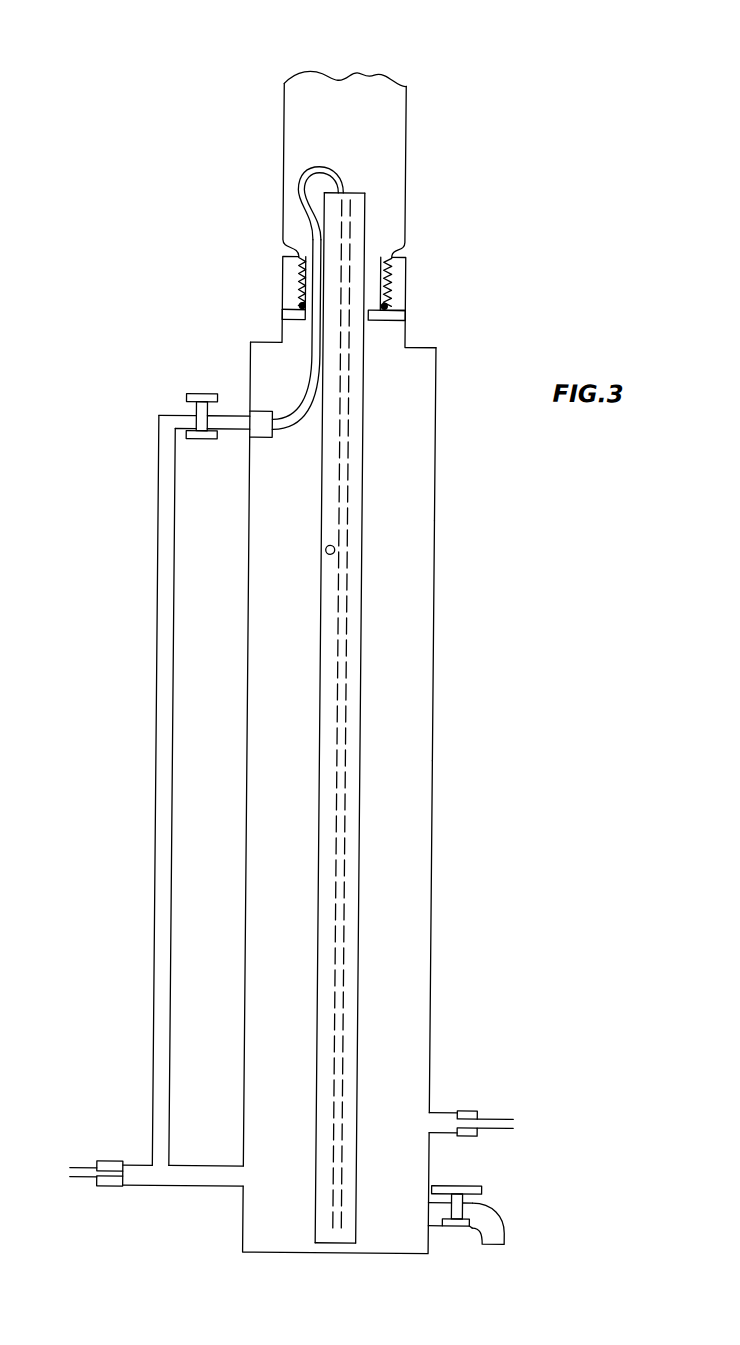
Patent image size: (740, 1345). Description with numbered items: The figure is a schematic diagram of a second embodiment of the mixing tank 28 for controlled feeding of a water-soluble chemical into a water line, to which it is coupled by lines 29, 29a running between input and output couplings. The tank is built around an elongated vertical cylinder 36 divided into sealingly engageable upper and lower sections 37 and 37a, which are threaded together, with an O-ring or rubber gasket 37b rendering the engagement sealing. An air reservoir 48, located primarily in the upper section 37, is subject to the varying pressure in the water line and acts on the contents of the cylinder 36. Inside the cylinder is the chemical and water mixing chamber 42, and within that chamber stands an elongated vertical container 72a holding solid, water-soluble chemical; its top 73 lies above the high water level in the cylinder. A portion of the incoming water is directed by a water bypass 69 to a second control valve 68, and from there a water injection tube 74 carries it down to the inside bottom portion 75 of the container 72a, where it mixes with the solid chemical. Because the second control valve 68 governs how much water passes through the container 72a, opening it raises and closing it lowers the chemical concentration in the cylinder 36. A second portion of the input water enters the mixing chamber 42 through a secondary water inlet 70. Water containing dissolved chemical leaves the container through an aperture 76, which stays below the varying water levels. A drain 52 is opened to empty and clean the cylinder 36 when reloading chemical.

The mixing tank 28 is at (437, 470).
The line 29 is at (94, 1183).
The line 29a is at (507, 1118).
The elongated vertical cylinder 36 is at (382, 798).
The upper section 37 is at (407, 127).
The lower section 37a is at (438, 890).
The O-ring or rubber gasket 37b is at (380, 309).
The chemical and water mixing chamber 42 is at (383, 679).
The air reservoir 48 is at (351, 110).
The drain 52 is at (504, 1206).
The second control valve 68 is at (168, 417).
The water bypass 69 is at (158, 984).
The secondary water inlet 70 is at (209, 1166).
The elongated vertical container 72a is at (406, 738).
The top 73 is at (358, 187).
The water injection tube 74 is at (334, 170).
The inside bottom portion 75 is at (341, 1233).
The aperture 76 is at (337, 549).